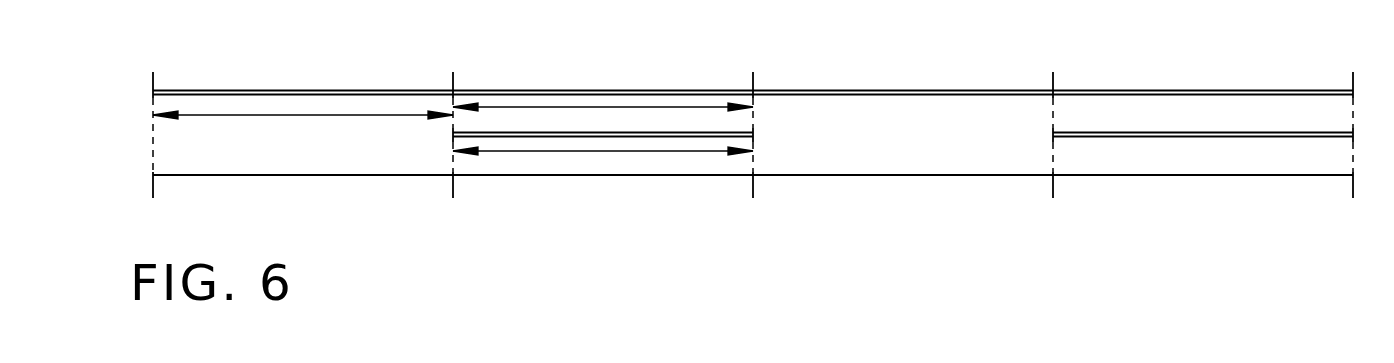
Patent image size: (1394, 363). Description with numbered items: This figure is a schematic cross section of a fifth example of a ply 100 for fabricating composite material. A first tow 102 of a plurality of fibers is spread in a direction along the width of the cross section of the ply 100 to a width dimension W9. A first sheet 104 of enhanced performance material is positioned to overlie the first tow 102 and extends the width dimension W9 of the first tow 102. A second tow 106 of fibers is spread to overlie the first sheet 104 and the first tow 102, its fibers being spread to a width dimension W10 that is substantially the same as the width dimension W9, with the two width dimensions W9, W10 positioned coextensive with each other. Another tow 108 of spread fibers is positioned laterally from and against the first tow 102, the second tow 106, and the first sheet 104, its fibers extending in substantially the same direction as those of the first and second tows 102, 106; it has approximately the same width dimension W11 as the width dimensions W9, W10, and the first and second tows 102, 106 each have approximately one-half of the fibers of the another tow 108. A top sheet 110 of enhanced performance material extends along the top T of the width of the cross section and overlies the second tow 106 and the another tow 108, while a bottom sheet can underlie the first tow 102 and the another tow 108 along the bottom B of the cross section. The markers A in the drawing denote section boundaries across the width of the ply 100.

The ply 100 is at (734, 127).
The first tow 102 is at (679, 163).
The first sheet of enhanced performance material 104 is at (517, 136).
The second tow 106 is at (552, 102).
The another tow 108 is at (252, 153).
The top sheet of enhanced performance material 110 is at (265, 90).
The width dimension of first tow W9 is at (593, 152).
The width dimension of second tow W10 is at (693, 107).
The width dimension of another tow W11 is at (293, 116).
The section line A is at (153, 76).
The top of the cross section T is at (1132, 90).
The bottom of the cross section B is at (1113, 176).